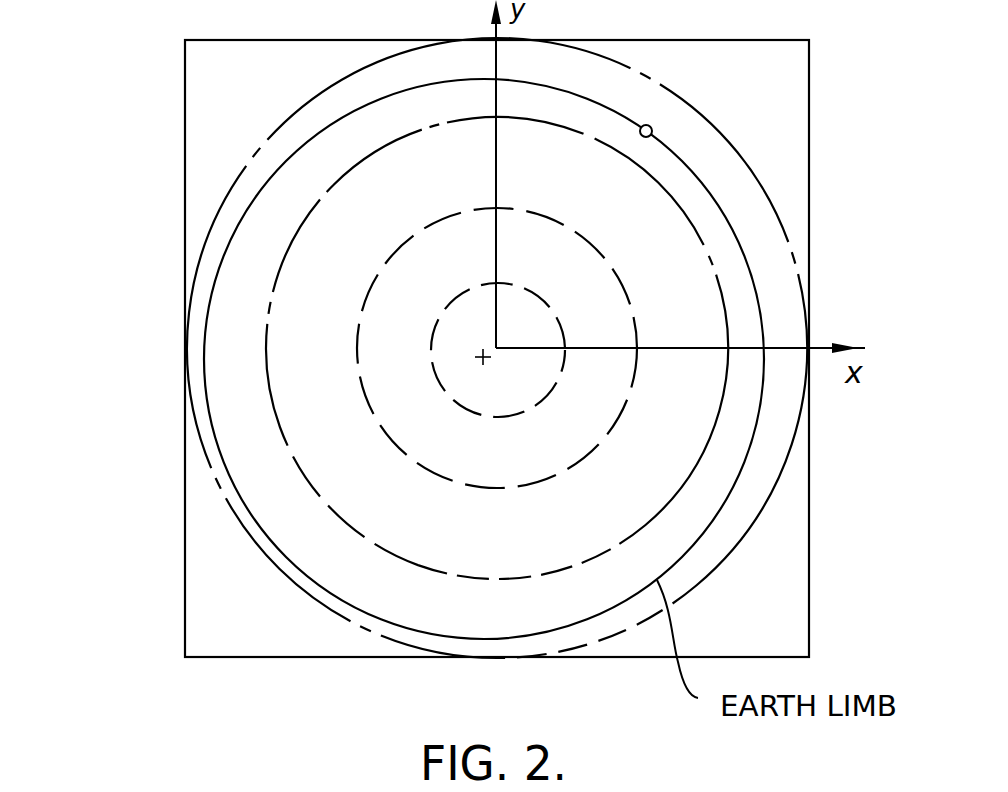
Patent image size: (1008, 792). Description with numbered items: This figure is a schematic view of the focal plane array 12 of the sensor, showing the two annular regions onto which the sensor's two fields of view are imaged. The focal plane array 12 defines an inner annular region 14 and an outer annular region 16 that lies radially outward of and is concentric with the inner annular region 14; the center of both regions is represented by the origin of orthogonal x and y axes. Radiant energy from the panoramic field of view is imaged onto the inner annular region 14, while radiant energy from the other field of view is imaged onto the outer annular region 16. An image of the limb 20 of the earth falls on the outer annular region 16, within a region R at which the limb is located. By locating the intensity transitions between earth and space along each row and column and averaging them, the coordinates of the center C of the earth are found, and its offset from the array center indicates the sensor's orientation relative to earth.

The focal plane array 12 is at (180, 182).
The inner annular region 14 is at (618, 417).
The outer annular region 16 is at (370, 543).
The limb of the earth 20 is at (734, 486).
The region at which the limb is located R is at (662, 124).
The center of the earth C is at (476, 346).